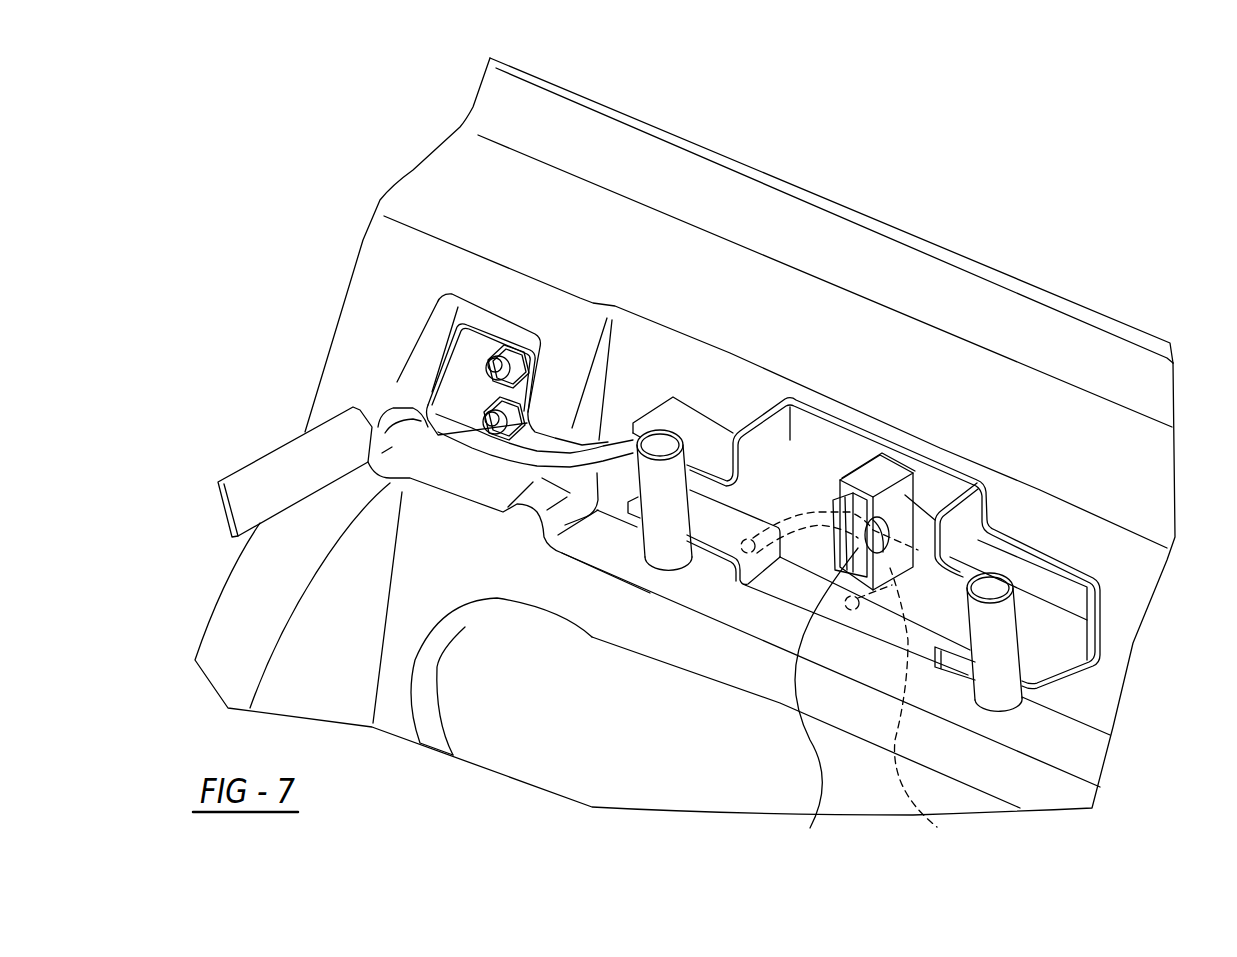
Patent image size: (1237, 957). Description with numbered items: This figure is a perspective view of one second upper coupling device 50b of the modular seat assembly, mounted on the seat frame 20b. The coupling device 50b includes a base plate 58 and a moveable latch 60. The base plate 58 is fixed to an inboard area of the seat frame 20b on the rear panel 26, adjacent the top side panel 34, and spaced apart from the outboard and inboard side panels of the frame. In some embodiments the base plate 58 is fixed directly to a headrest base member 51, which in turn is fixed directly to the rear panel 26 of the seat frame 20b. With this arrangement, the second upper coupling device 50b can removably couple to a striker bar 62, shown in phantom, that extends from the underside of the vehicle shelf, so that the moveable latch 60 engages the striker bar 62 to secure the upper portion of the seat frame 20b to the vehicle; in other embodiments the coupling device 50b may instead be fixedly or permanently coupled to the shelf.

The seat frame 20b is at (722, 298).
The top side panel 34 is at (643, 152).
The second upper coupling device 50b is at (893, 455).
The headrest base member 51 is at (957, 486).
The base plate 58 is at (905, 495).
The moveable latch 60 is at (820, 635).
The striker bar 62 is at (813, 510).
The rear panel 26 is at (822, 700).